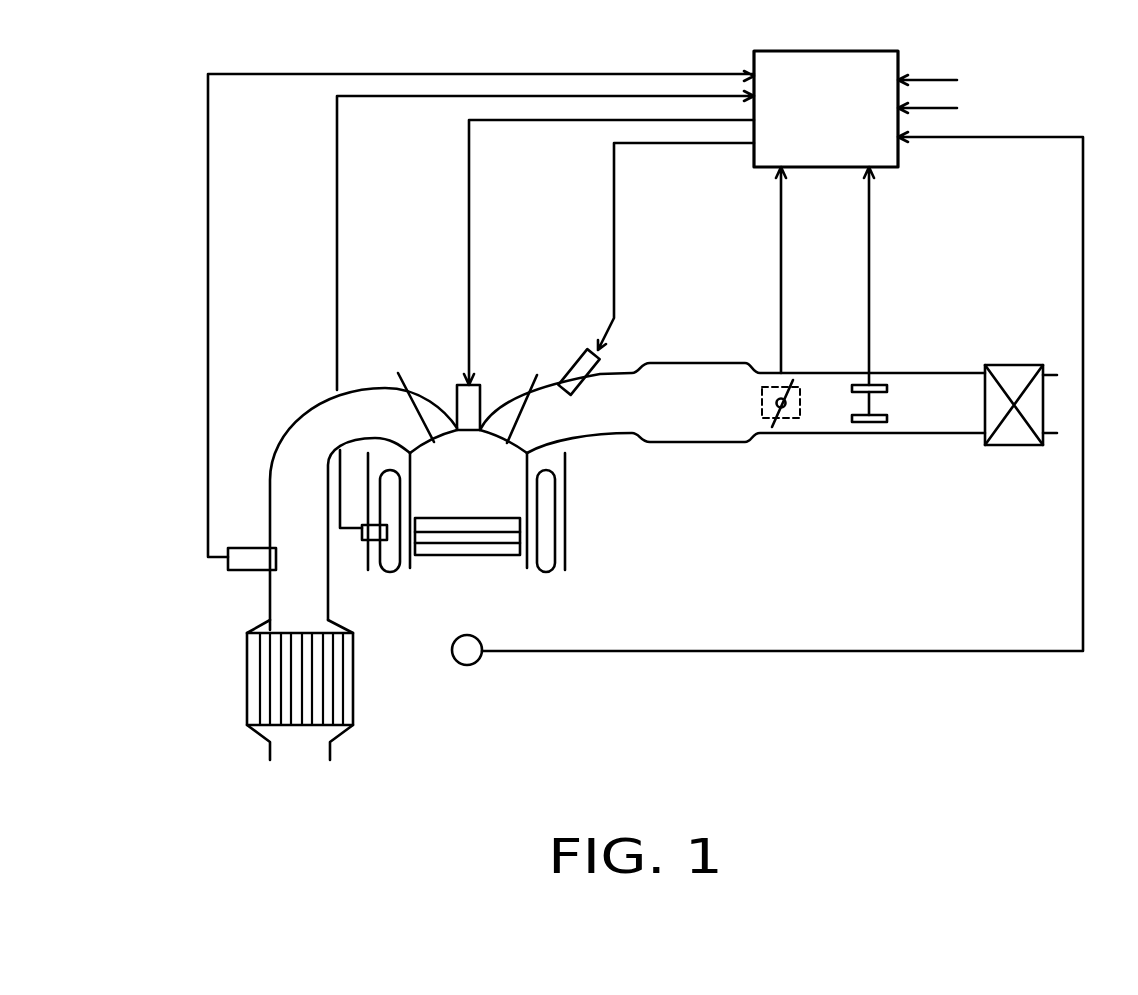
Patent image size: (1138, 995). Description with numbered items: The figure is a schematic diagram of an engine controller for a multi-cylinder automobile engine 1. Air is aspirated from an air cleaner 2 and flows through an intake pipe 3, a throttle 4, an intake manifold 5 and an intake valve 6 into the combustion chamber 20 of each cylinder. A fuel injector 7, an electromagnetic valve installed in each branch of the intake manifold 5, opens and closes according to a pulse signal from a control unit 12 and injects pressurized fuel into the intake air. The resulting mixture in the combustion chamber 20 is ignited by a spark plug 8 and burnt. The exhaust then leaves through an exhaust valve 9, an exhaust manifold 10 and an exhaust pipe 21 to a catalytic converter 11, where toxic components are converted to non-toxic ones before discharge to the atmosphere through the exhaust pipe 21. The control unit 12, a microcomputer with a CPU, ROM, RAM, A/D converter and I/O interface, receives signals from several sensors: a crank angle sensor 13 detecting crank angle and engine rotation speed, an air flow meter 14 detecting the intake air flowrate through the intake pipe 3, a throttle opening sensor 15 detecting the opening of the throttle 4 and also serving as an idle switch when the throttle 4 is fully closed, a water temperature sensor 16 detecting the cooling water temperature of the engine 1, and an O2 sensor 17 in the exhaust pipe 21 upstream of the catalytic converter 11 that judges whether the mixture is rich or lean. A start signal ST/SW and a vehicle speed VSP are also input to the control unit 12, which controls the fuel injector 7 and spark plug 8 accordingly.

The engine 1 is at (578, 520).
The air cleaner 2 is at (1003, 445).
The intake pipe 3 is at (897, 433).
The throttle 4 is at (775, 372).
The intake manifold 5 is at (618, 433).
The intake valve 6 is at (537, 375).
The fuel injector 7 is at (575, 358).
The spark plug 8 is at (462, 383).
The exhaust valve 9 is at (409, 388).
The exhaust manifold 10 is at (285, 422).
The catalytic converter 11 is at (357, 690).
The control unit 12 is at (806, 50).
The crank angle sensor 13 is at (767, 418).
The air flow meter 14 is at (876, 384).
The throttle opening sensor 15 is at (785, 430).
The water temperature sensor 16 is at (368, 541).
The O2 sensor 17 is at (237, 572).
The combustion chamber 20 is at (467, 514).
The exhaust pipe 21 is at (268, 607).